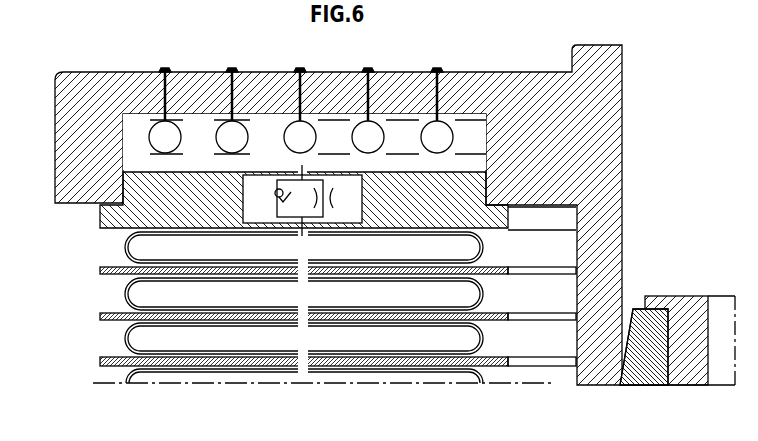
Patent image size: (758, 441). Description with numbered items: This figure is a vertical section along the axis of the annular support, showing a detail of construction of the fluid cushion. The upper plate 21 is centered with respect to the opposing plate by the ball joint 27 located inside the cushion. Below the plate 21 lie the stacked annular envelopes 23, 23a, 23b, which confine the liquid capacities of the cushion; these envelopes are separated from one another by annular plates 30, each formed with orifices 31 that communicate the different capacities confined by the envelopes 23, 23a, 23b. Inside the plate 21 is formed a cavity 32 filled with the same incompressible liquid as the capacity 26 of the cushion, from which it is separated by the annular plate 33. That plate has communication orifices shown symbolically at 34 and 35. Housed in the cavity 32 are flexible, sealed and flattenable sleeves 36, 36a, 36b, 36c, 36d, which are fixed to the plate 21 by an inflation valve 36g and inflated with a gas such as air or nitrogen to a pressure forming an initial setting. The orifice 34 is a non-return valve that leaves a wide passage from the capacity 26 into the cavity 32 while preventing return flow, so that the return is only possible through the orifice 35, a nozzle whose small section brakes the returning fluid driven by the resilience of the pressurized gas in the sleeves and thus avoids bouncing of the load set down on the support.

The plate 21 is at (78, 126).
The cavity 32 is at (132, 150).
The annular plate 33 is at (118, 216).
The annular envelope 23 is at (143, 256).
The annular envelope 23a is at (155, 295).
The annular envelope 23b is at (150, 337).
The capacity 26 is at (462, 343).
The annular plate 30 is at (108, 367).
The orifice 31 is at (301, 363).
The non return valve 34 is at (268, 192).
The nozzle 35 is at (340, 197).
The flexible sleeve 36 is at (167, 137).
The flexible sleeve 36a is at (236, 137).
The flexible sleeve 36b is at (308, 137).
The flexible sleeve 36c is at (376, 137).
The supply pipe 36d is at (444, 137).
The inflation valve 36g is at (163, 70).
The ball joint 27 is at (645, 318).